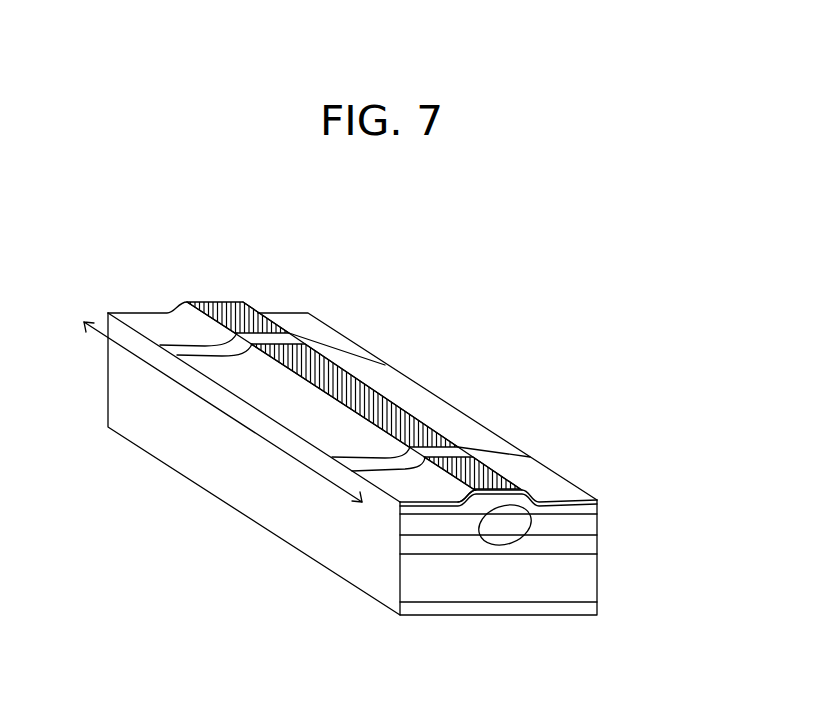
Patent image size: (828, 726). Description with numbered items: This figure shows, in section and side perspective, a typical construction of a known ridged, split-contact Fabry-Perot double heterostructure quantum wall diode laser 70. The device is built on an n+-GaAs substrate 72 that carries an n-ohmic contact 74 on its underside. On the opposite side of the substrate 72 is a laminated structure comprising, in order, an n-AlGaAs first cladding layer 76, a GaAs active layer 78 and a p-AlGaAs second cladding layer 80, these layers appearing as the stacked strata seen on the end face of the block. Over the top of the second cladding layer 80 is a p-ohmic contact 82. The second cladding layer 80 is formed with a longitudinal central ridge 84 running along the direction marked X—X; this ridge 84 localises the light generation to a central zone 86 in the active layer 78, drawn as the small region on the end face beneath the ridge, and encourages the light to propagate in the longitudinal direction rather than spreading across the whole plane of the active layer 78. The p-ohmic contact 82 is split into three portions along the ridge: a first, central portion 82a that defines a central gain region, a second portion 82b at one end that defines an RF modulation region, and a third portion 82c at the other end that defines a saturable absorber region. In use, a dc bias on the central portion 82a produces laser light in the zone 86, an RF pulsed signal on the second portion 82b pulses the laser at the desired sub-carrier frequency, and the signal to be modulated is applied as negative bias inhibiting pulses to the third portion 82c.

The double heterostructure quantum wall diode laser 70 is at (210, 272).
The n+-GaAs substrate 72 is at (590, 577).
The n-ohmic contact 74 is at (600, 605).
The first cladding layer 76 is at (593, 545).
The active layer 78 is at (593, 527).
The second cladding layer 80 is at (598, 511).
The p-ohmic contact 82 is at (398, 502).
The first, central portion 82a is at (348, 377).
The second portion 82b is at (258, 318).
The third portion 82c is at (506, 477).
The longitudinal central ridge 84 is at (492, 493).
The central zone 86 is at (515, 542).